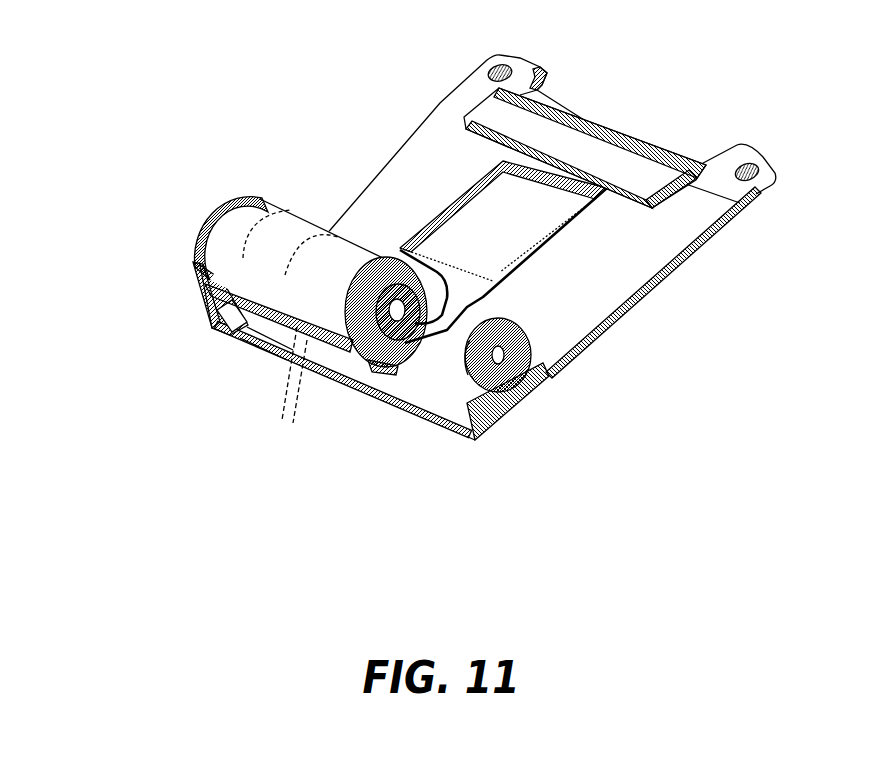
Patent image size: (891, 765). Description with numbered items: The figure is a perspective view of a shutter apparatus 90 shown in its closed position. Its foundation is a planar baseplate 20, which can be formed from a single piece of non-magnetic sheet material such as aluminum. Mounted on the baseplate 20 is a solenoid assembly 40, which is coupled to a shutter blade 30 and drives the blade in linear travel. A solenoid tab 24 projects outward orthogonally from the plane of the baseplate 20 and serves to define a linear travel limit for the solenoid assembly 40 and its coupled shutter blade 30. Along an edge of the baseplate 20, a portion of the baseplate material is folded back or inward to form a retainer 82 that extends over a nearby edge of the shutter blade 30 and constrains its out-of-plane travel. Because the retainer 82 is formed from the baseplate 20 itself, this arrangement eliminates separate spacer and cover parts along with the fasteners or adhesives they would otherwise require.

The baseplate 20 is at (665, 272).
The solenoid tab 24 is at (197, 280).
The shutter blade 30 is at (430, 207).
The solenoid assembly 40 is at (156, 197).
The retainer 82 is at (750, 206).
The shutter apparatus 90 is at (661, 446).